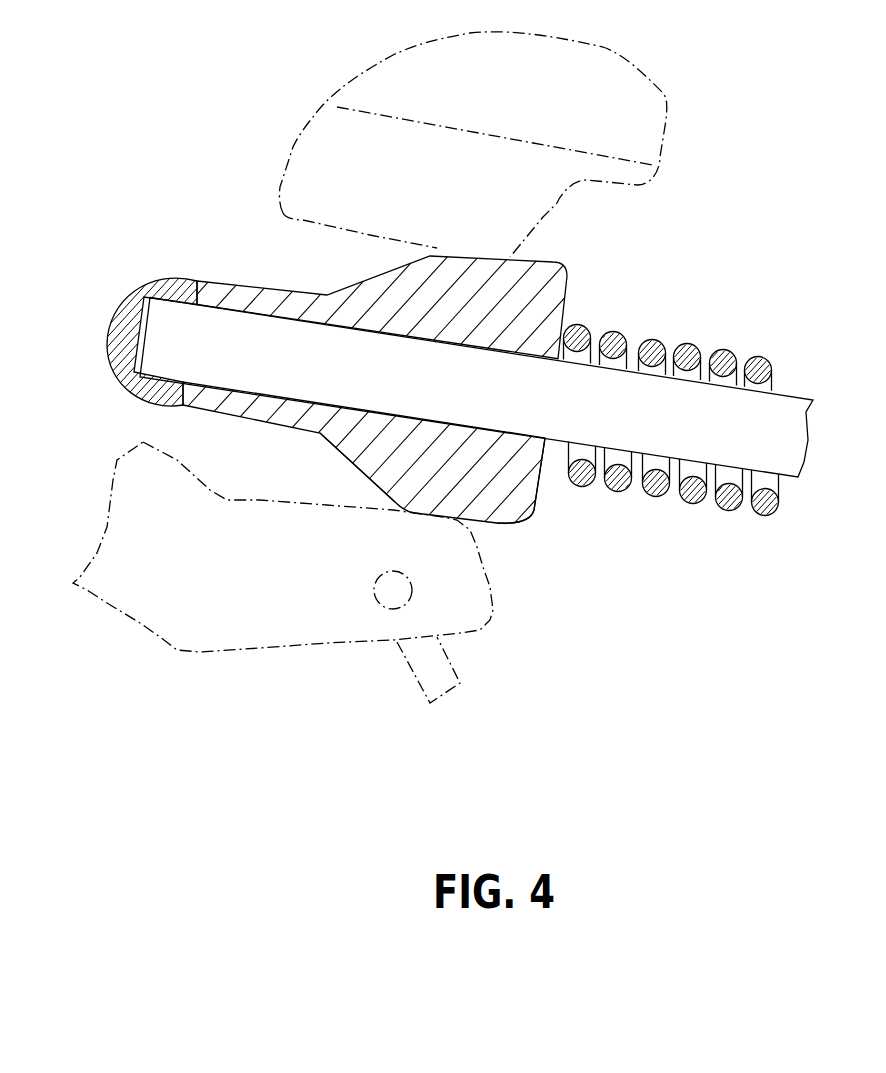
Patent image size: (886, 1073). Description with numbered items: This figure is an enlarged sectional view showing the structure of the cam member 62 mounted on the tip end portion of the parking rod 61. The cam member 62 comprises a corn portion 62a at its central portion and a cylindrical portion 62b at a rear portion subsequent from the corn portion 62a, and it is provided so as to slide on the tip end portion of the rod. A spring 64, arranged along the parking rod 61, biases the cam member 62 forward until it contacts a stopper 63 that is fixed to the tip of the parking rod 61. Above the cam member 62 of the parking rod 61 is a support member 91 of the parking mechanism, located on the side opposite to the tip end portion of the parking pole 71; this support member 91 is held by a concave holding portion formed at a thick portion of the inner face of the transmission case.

The parking rod 61 is at (793, 408).
The cam member 62 is at (381, 402).
The corn portion 62a is at (338, 452).
The cylindrical portion 62b is at (503, 527).
The stopper 63 is at (127, 295).
The spring 64 is at (697, 350).
The parking pole 71 is at (297, 647).
The support member 91 is at (665, 122).